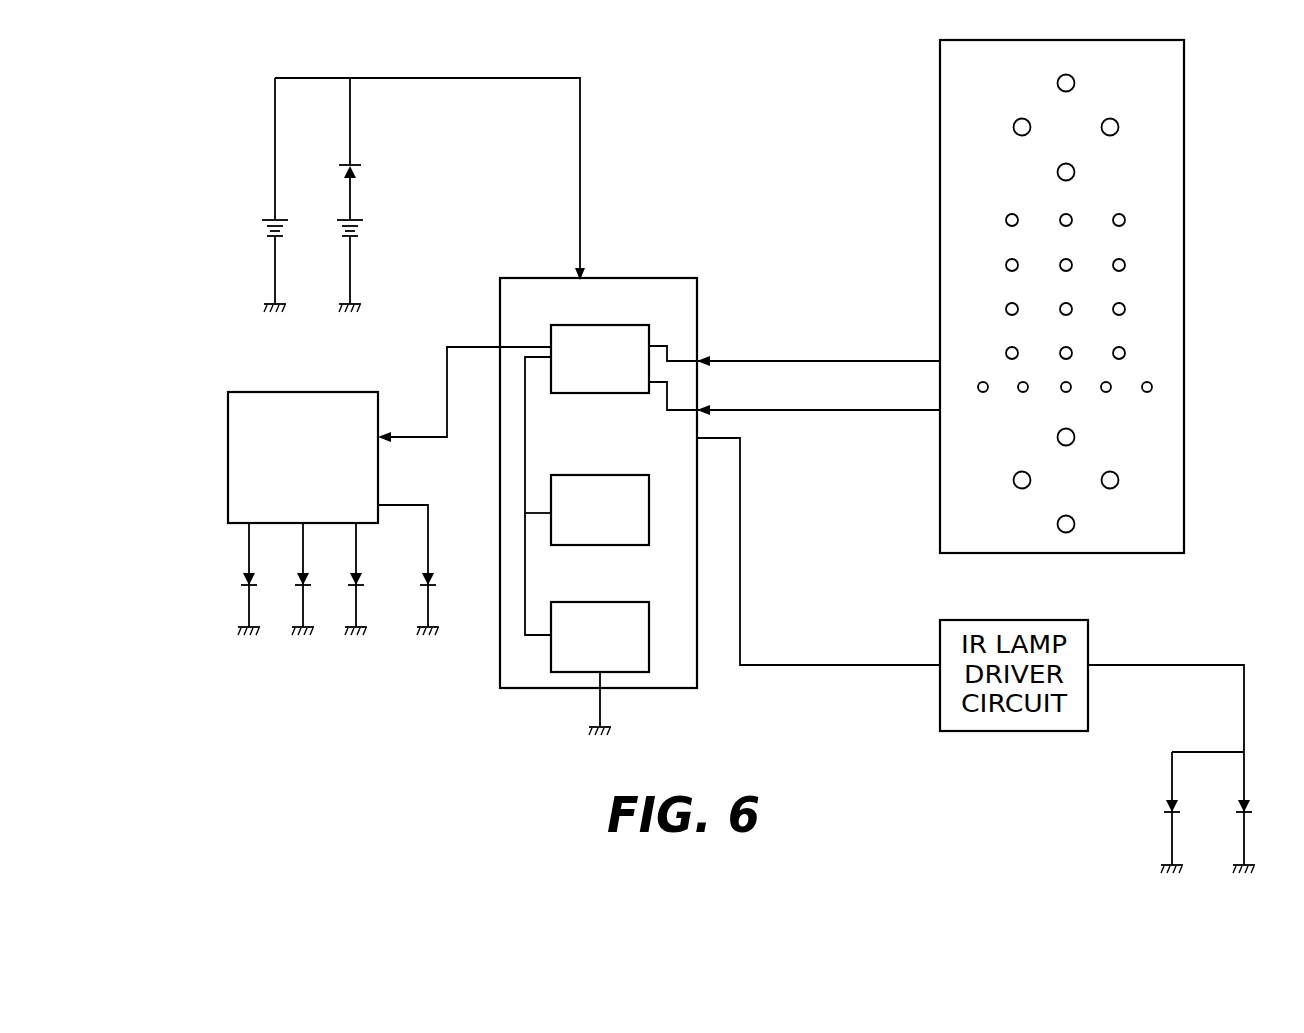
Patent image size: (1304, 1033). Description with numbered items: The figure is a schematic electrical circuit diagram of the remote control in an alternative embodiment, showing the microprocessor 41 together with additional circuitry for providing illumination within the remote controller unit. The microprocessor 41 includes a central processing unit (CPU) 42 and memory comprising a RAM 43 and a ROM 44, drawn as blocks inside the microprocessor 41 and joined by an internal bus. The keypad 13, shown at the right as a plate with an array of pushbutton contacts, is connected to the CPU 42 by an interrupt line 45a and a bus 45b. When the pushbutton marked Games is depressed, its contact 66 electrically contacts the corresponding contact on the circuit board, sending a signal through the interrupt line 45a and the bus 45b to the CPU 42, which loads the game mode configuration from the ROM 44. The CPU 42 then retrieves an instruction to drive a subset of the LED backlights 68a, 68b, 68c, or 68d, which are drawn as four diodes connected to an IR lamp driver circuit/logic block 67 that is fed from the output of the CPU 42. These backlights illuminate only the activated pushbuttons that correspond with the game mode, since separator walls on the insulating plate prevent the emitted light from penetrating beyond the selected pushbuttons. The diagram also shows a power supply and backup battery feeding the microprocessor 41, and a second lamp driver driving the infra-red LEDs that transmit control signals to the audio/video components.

The keypad 13 is at (1172, 120).
The contact 66 is at (1153, 387).
The microprocessor 41 is at (645, 278).
The central processing unit 42 is at (570, 325).
The RAM 43 is at (570, 475).
The ROM 44 is at (565, 602).
The interrupt line 45a is at (790, 361).
The bus 45b is at (795, 410).
The IR lamp driver circuit/logic 67 is at (330, 392).
The LED backlight 68a is at (249, 558).
The LED backlight 68b is at (323, 558).
The LED backlight 68c is at (377, 558).
The LED backlight 68d is at (452, 558).